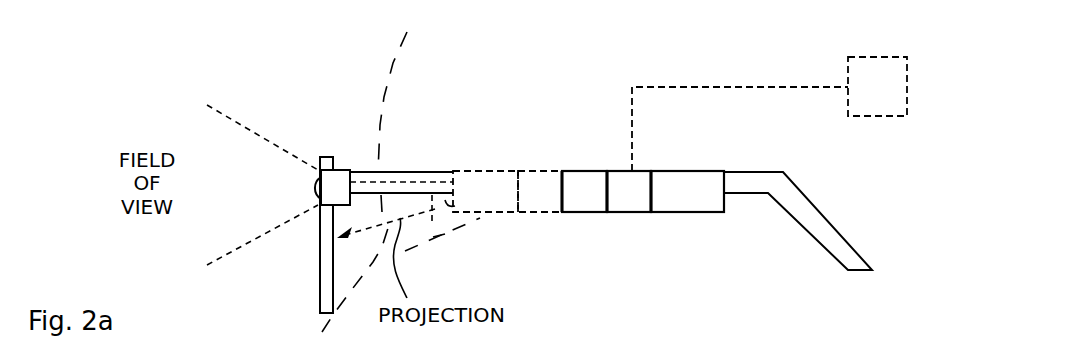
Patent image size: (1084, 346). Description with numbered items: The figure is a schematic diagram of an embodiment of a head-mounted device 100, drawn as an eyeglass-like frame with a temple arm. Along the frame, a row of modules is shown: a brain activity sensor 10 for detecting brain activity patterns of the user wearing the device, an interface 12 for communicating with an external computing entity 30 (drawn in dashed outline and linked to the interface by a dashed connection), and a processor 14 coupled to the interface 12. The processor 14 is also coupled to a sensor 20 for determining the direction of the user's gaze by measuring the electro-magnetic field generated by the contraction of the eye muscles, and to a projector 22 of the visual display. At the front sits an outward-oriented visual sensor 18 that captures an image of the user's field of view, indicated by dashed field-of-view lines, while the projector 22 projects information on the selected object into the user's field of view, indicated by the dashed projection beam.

The brain activity sensor 10 is at (693, 212).
The interface 12 is at (652, 212).
The processor 14 is at (608, 212).
The outward-oriented visual sensor 18 is at (340, 170).
The sensor for measuring the electro-magnetic field 20 is at (555, 212).
The projector 22 is at (508, 212).
The computing entity 30 is at (887, 116).
The head-mounted device 100 is at (863, 272).